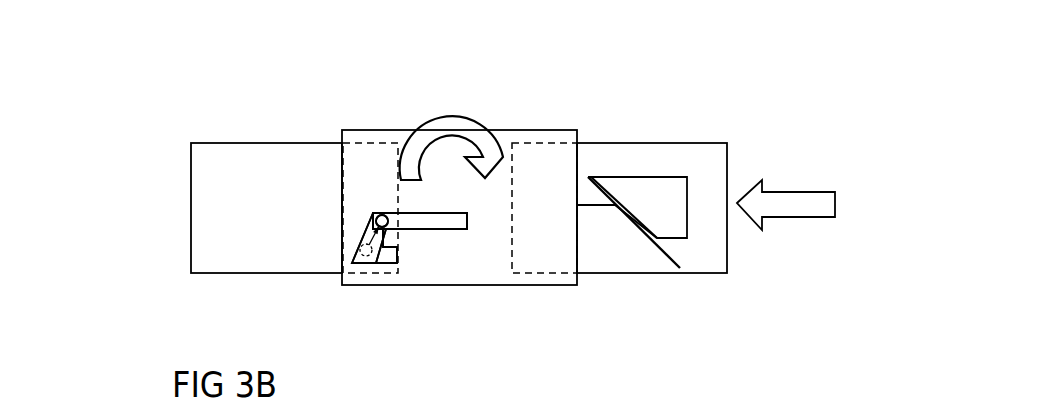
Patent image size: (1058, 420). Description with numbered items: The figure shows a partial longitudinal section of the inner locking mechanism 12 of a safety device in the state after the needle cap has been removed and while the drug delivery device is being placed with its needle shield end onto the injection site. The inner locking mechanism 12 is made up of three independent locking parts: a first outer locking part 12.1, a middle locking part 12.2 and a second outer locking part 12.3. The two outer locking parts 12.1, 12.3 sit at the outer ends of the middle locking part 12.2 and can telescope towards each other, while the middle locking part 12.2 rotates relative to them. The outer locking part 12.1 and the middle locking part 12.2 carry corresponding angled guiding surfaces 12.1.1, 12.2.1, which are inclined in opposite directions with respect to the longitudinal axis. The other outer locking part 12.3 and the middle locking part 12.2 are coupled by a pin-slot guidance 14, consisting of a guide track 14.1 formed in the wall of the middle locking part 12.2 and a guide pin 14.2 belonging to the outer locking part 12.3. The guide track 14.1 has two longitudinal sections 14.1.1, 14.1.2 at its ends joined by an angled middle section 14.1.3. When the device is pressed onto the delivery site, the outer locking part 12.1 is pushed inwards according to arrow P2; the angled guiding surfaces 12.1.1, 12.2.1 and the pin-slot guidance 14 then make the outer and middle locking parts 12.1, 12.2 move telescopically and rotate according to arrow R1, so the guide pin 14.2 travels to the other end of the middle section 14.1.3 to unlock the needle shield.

The inner locking mechanism 12 is at (678, 72).
The outer locking part 12.1 is at (683, 143).
The angled guiding surface 12.1.1 is at (620, 203).
The middle locking part 12.2 is at (555, 130).
The angled guiding surface 12.2.1 is at (636, 228).
The outer locking part 12.3 is at (218, 142).
The pin-slot guidance 14 is at (458, 231).
The guide track 14.1 is at (452, 213).
The longitudinal section 14.1.1 is at (388, 265).
The longitudinal section 14.1.2 is at (437, 212).
The middle section 14.1.3 is at (370, 219).
The guide pin 14.2 is at (360, 265).
The arrow R1 is at (467, 122).
The arrow P2 is at (790, 205).